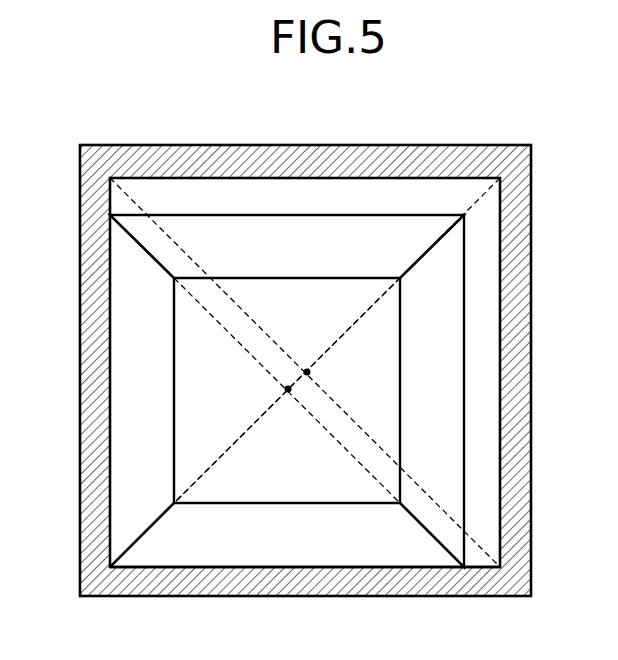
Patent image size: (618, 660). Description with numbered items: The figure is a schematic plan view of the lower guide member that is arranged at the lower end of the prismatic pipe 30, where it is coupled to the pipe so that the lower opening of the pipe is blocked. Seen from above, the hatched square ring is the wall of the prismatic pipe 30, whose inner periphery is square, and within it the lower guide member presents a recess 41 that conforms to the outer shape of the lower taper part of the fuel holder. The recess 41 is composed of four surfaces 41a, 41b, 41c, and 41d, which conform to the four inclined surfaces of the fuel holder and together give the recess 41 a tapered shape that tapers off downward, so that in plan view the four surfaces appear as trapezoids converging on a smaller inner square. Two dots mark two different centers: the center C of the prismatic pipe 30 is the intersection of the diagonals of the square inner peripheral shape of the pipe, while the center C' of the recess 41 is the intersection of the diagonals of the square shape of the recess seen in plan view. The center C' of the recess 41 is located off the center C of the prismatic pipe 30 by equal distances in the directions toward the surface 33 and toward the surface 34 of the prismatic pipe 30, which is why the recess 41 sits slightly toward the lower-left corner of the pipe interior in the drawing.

The prismatic pipe 30 is at (532, 245).
The surface 33 is at (289, 559).
The surface 34 is at (113, 372).
The recess 41 is at (223, 552).
The surface 41a is at (375, 550).
The surface 41b is at (126, 450).
The surface 41c is at (293, 235).
The surface 41d is at (447, 352).
The center of the prismatic pipe C is at (443, 386).
The center of the recess C' is at (436, 413).